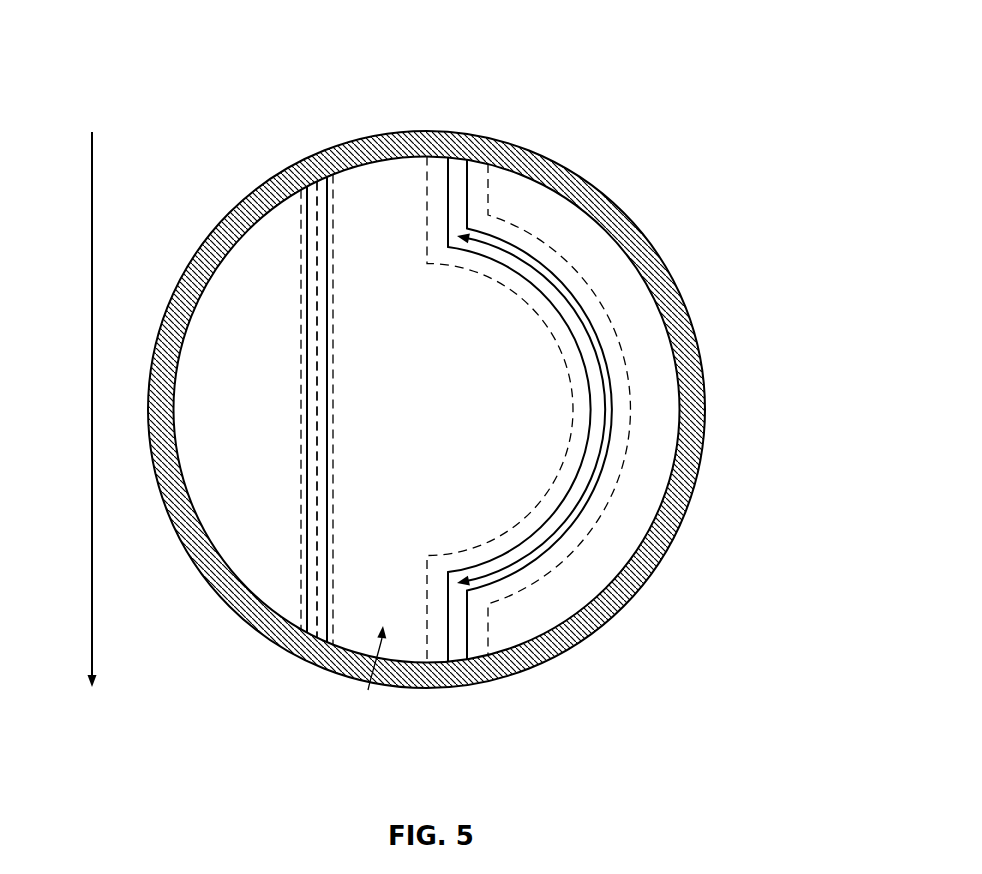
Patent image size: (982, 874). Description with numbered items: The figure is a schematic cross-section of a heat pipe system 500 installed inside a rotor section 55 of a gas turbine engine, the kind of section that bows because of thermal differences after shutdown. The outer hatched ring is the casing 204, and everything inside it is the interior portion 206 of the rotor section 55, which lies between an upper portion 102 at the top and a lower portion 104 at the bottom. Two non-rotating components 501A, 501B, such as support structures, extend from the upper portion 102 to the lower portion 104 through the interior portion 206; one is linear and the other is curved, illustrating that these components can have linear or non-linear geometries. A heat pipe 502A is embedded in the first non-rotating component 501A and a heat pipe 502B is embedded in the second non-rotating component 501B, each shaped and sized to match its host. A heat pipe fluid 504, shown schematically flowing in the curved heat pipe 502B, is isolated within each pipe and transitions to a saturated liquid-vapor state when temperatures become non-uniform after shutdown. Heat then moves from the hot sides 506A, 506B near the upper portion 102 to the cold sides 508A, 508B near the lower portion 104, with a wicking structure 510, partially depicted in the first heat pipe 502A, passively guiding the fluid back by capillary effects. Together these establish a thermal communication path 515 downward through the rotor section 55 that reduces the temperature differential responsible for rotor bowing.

The rotor section 55 is at (244, 55).
The upper portion 102 is at (433, 98).
The lower portion 104 is at (425, 729).
The casing 204 is at (703, 405).
The interior portion 206 is at (358, 678).
The heat pipe system 500 is at (632, 117).
The non-rotating component 501A is at (302, 577).
The non-rotating component 501B is at (590, 524).
The heat pipe 502A is at (234, 410).
The heat pipe 502B is at (591, 410).
The heat pipe fluid 504 is at (580, 322).
The hot side 506A is at (313, 178).
The hot side 506B is at (458, 163).
The cold side 508A is at (313, 628).
The cold side 508B is at (457, 652).
The wicking structure 510 is at (315, 508).
The thermal communication path 515 is at (92, 282).